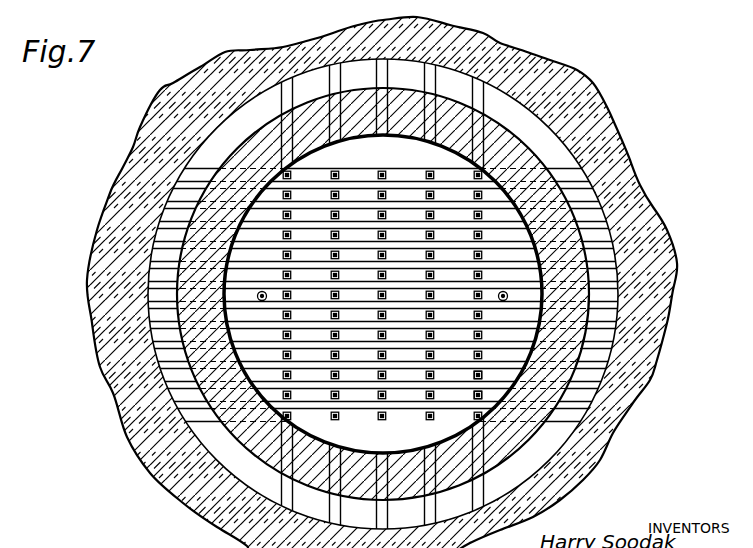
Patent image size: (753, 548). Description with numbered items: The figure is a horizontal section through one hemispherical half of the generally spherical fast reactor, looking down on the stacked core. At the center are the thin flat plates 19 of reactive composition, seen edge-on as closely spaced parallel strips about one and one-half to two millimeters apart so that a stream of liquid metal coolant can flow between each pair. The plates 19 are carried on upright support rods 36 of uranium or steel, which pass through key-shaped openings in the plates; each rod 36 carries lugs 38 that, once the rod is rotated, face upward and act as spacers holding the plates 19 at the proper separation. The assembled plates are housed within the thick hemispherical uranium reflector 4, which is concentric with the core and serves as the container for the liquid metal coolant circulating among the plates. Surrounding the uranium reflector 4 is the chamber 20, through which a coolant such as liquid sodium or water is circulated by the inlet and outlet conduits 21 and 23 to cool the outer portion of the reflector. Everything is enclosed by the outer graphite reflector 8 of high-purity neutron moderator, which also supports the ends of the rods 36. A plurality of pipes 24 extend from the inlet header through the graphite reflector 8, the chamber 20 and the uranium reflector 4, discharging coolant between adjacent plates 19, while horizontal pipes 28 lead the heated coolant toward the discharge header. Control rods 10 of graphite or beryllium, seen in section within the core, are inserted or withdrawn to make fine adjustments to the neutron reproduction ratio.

The uranium reflector 4 is at (120, 322).
The graphite reflector 8 is at (577, 70).
The control rods 10 is at (257, 292).
The plates 19 is at (352, 180).
The chamber 20 is at (220, 443).
The inlet conduit 21 is at (680, 272).
The outlet conduit 23 is at (83, 278).
The pipes 24 is at (565, 170).
The horizontal pipes 28 is at (180, 167).
The support rods 36 is at (486, 100).
The lugs 38 is at (474, 397).